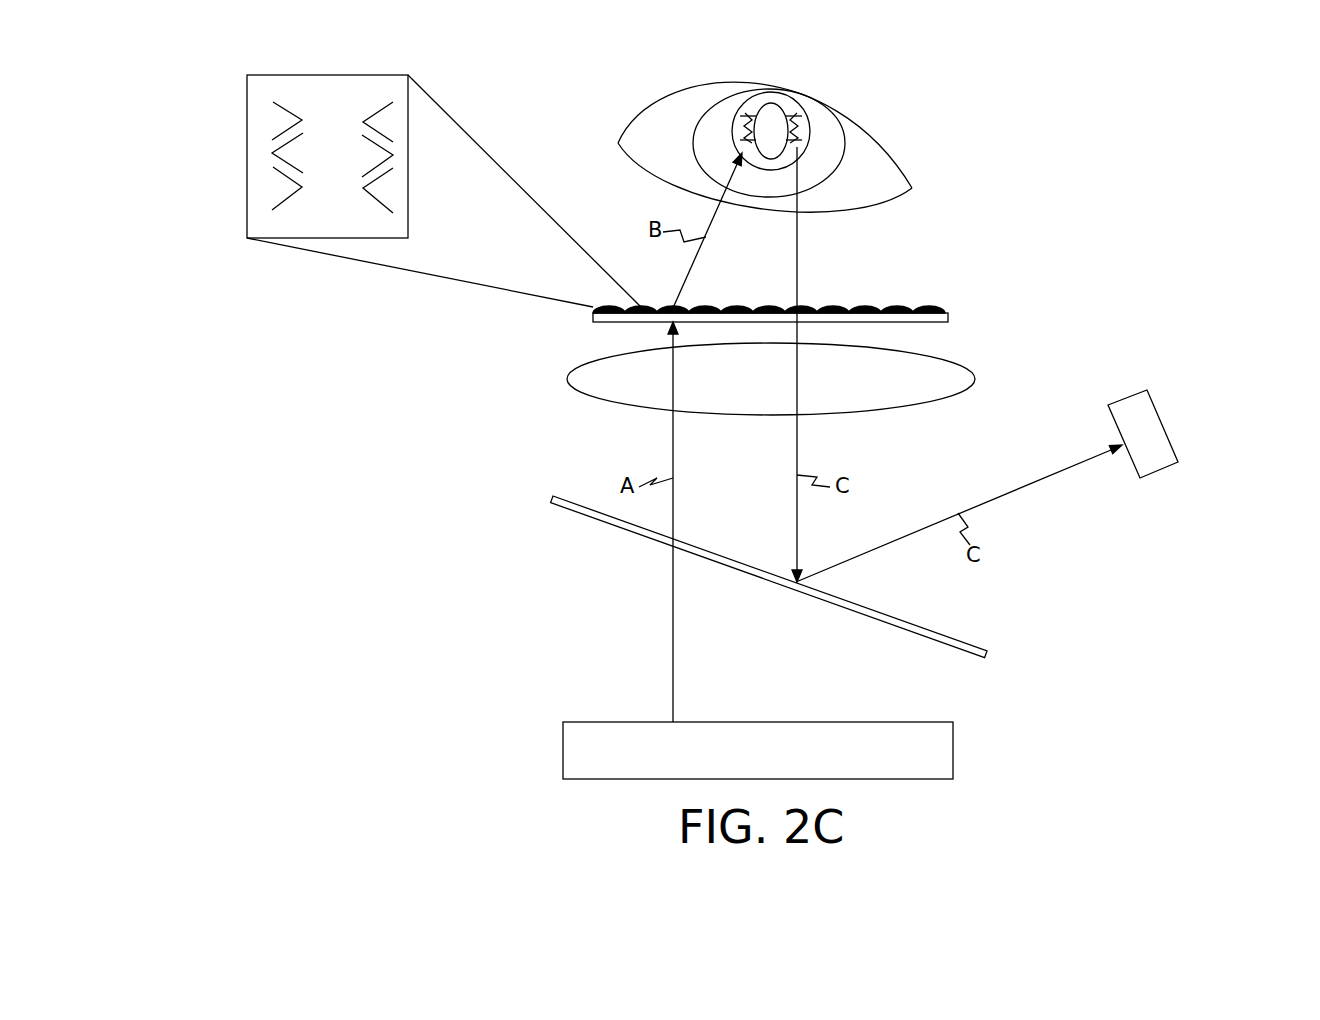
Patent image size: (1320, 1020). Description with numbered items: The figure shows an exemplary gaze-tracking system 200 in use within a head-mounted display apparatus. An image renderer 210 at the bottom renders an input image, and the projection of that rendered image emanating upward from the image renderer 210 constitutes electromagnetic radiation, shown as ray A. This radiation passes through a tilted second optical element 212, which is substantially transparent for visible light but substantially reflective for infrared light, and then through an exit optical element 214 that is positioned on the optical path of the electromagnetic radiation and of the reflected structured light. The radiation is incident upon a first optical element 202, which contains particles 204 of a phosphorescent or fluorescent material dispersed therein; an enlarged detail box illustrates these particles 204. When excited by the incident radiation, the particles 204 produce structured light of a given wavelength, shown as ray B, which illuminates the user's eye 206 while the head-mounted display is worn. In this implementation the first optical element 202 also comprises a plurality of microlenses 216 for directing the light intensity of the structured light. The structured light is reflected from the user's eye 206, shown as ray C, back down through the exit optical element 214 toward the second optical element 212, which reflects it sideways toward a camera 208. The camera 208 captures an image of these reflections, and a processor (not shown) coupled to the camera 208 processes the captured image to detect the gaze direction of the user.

The gaze-tracking system 200 is at (942, 81).
The first optical element 202 is at (825, 283).
The particles of a phosphorescent or fluorescent material 204 is at (394, 191).
The user's eye 206 is at (808, 147).
The camera 208 is at (1183, 432).
The image renderer 210 is at (815, 750).
The second optical element 212 is at (791, 577).
The exit optical element 214 is at (825, 379).
The microlenses 216 is at (769, 278).